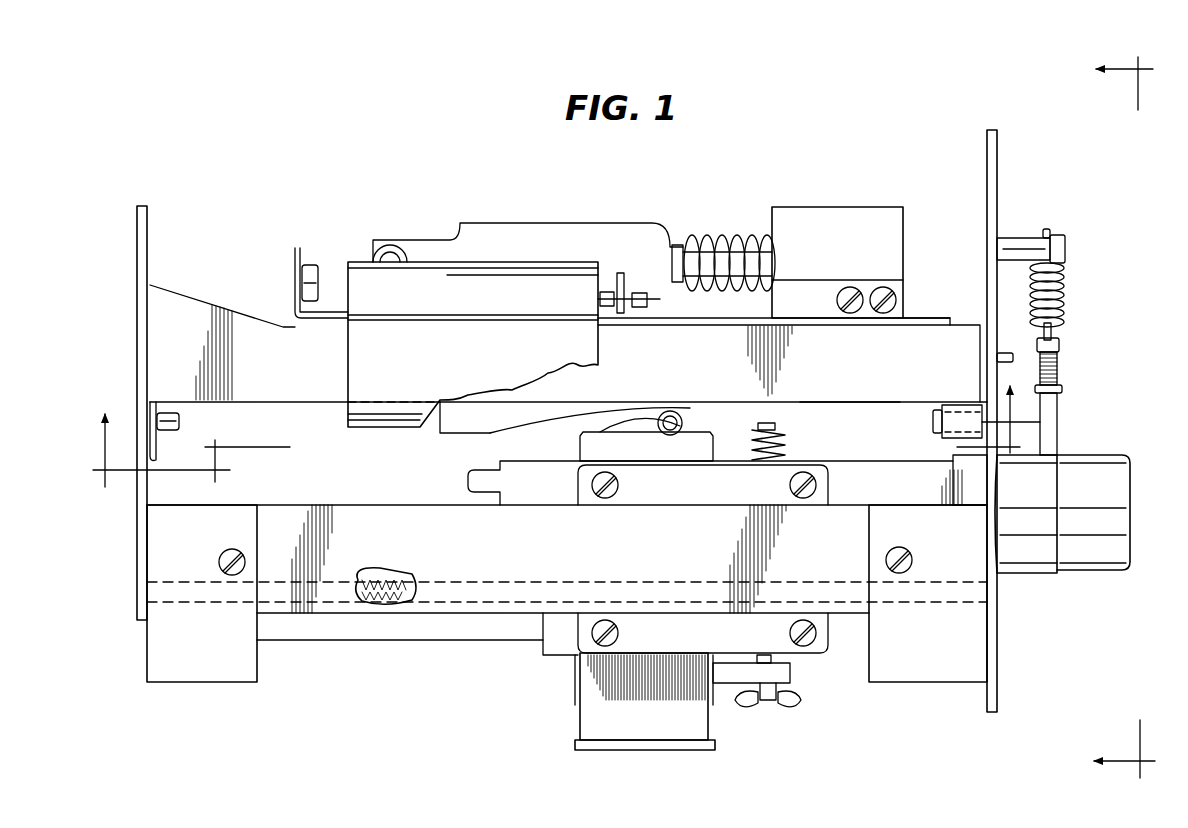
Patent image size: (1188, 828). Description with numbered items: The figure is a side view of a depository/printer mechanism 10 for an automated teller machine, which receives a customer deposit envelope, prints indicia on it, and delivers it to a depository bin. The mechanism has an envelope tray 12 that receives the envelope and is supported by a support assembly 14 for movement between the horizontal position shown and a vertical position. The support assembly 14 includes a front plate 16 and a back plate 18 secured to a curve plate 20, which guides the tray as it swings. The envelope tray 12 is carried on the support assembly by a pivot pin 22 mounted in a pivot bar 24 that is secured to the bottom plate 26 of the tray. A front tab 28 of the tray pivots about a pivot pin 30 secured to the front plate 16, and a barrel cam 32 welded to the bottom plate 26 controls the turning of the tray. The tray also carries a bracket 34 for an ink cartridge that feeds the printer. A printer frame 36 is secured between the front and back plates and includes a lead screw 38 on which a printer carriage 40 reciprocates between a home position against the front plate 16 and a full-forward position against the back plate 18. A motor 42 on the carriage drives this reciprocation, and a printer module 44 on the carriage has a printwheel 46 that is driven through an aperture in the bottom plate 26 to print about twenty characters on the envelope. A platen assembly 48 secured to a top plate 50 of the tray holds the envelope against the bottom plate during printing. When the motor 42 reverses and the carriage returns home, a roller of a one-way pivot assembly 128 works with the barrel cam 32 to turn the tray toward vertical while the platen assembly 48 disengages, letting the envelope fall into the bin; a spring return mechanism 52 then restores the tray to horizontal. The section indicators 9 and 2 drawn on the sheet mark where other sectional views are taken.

The depository/printer mechanism 10 is at (405, 723).
The envelope tray 12 is at (698, 374).
The support assembly 14 is at (1013, 180).
The front plate 16 is at (137, 327).
The back plate 18 is at (998, 213).
The curve plate 20 is at (338, 494).
The pivot pin 22 is at (933, 418).
The pivot bar 24 is at (935, 445).
The bottom plate 26 is at (862, 404).
The front tab 28 is at (156, 458).
The pivot pin 30 is at (180, 420).
The barrel cam 32 is at (470, 436).
The bracket 34 is at (432, 367).
The printer frame 36 is at (257, 672).
The lead screw 38 is at (388, 574).
The printer carriage 40 is at (882, 492).
The motor 42 is at (1133, 518).
The printer module 44 is at (634, 724).
The printwheel 46 is at (600, 422).
The platen assembly 48 is at (545, 222).
The top plate 50 is at (960, 320).
The return mechanism 52 is at (1070, 325).
The one-way pivot assembly 128 is at (692, 414).
The section line 9- 9 is at (559, 430).
The section line 2- 2 is at (1110, 417).